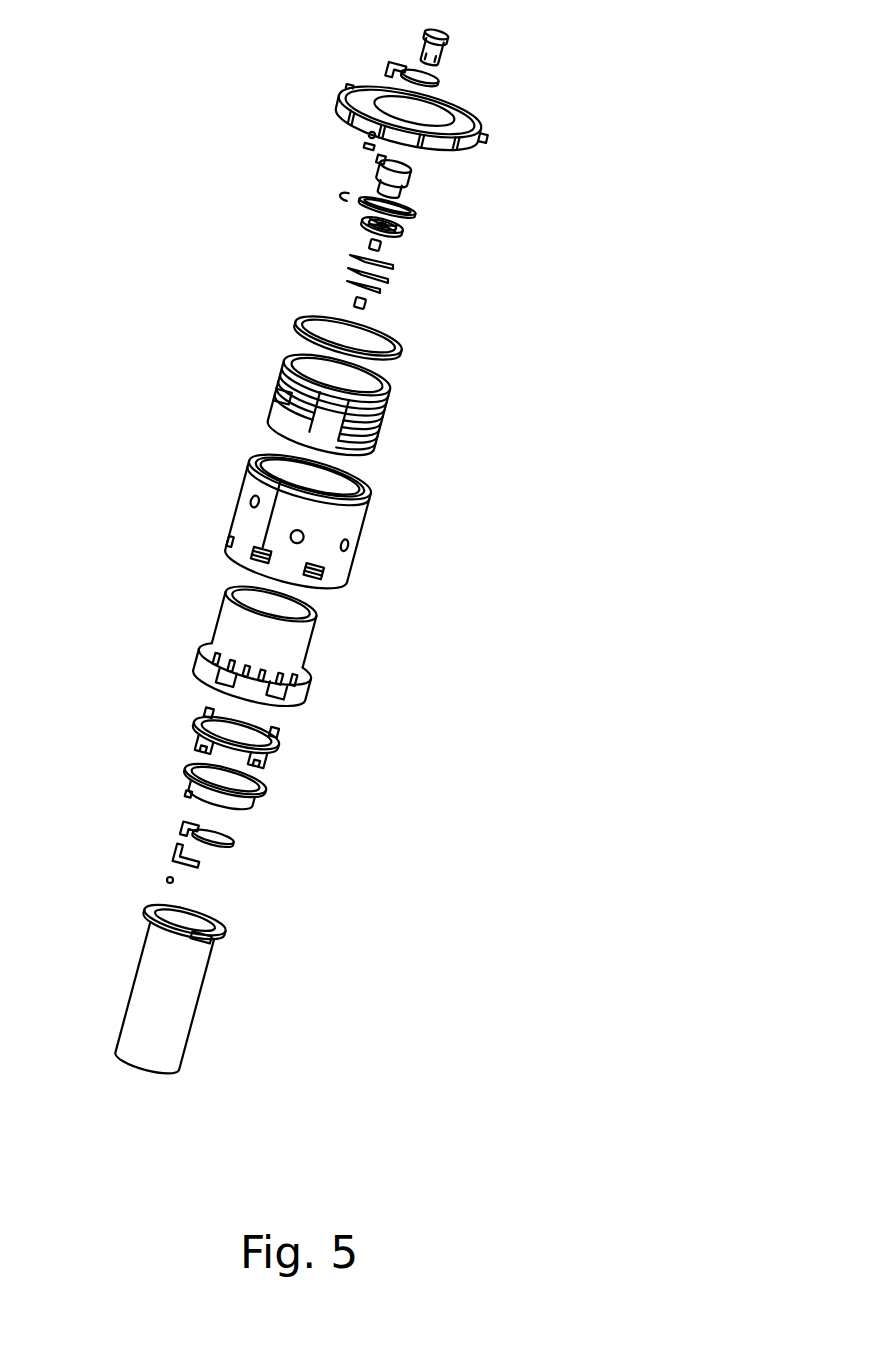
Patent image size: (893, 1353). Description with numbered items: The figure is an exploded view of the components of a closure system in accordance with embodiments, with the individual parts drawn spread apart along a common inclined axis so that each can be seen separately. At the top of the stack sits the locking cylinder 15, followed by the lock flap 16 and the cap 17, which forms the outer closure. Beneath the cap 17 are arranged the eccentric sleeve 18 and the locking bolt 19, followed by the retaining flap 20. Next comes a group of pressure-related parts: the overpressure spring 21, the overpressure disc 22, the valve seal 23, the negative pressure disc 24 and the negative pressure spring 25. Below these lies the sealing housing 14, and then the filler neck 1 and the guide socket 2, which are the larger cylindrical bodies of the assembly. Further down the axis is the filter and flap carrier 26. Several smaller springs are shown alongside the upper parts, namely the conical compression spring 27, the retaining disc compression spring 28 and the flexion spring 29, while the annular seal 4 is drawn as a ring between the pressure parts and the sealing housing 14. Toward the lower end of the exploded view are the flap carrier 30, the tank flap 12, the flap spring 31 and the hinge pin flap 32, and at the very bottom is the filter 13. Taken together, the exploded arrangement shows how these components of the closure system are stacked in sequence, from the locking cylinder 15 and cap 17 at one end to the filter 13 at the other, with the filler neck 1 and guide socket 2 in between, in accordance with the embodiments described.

The filler neck 1 is at (367, 543).
The guide socket 2 is at (322, 648).
The annular seal 4 is at (292, 323).
The tank flap 12 is at (175, 828).
The filter 13 is at (130, 972).
The sealing housing 14 is at (388, 428).
The locking cylinder 15 is at (454, 46).
The lock flap 16 is at (452, 84).
The cap 17 is at (488, 137).
The eccentric sleeve 18 is at (419, 182).
The locking bolt 19 is at (418, 217).
The retaining flap 20 is at (389, 246).
The overpressure spring 21 is at (406, 232).
The overpressure disc 22 is at (398, 267).
The valve seal 23 is at (397, 283).
The negative pressure disc 24 is at (383, 295).
The negative pressure spring 25 is at (373, 313).
The filter and flap carrier 26 is at (283, 752).
The conical compression spring 27 is at (360, 133).
The retaining disc compression spring 28 is at (358, 144).
The flexion spring 29 is at (332, 188).
The flap carrier 30 is at (180, 779).
The flap spring 31 is at (168, 850).
The hinge pin flap 32 is at (163, 877).